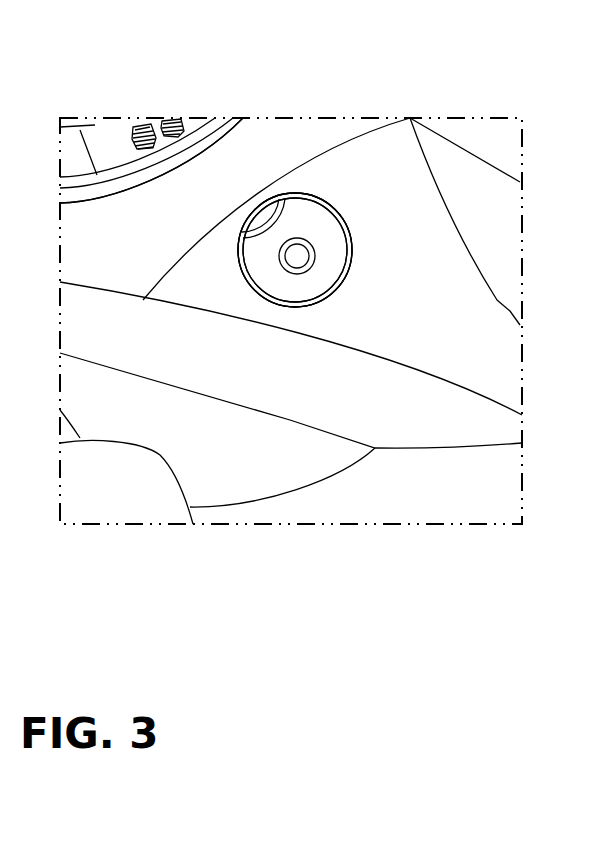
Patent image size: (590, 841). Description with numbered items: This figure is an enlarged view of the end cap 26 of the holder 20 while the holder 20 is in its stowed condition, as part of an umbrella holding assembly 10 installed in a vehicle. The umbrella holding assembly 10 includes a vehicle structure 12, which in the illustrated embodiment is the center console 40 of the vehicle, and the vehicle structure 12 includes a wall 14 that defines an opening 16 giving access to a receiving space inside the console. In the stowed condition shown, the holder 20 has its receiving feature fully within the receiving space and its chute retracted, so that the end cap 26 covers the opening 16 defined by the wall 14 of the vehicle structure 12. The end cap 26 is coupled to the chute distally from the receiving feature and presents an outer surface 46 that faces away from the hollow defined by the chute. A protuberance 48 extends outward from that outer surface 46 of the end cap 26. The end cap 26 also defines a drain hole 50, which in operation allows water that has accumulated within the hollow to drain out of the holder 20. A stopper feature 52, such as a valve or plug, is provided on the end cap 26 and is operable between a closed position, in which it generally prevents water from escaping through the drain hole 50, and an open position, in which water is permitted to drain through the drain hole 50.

The umbrella holding assembly 10 is at (336, 184).
The vehicle structure 12 is at (113, 208).
The wall 14 is at (148, 217).
The opening 16 is at (299, 171).
The holder 20 is at (352, 205).
The end cap 26 is at (348, 244).
The center console 40 is at (195, 197).
The outer surface 46 is at (333, 257).
The protuberance 48 is at (267, 215).
The drain hole 50 is at (266, 289).
The stopper feature 52 is at (297, 258).